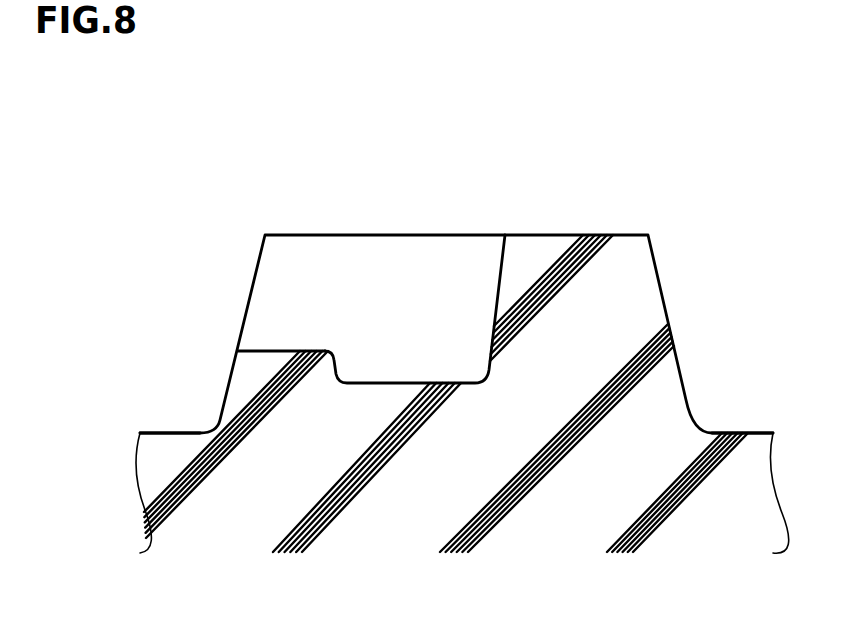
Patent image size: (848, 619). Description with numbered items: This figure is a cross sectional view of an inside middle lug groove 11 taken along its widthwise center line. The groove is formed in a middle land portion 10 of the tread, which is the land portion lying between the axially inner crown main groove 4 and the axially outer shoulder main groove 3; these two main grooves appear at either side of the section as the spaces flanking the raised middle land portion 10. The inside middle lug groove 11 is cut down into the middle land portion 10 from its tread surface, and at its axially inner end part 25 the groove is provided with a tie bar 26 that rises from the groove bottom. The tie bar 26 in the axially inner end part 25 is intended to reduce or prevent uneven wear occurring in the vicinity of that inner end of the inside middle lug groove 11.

The shoulder main groove 3 is at (733, 433).
The crown main groove 4 is at (178, 430).
The middle land portion 10 is at (462, 331).
The inside middle lug groove 11 is at (393, 293).
The axially inner end part 25 is at (290, 285).
The tie bar 26 is at (312, 351).